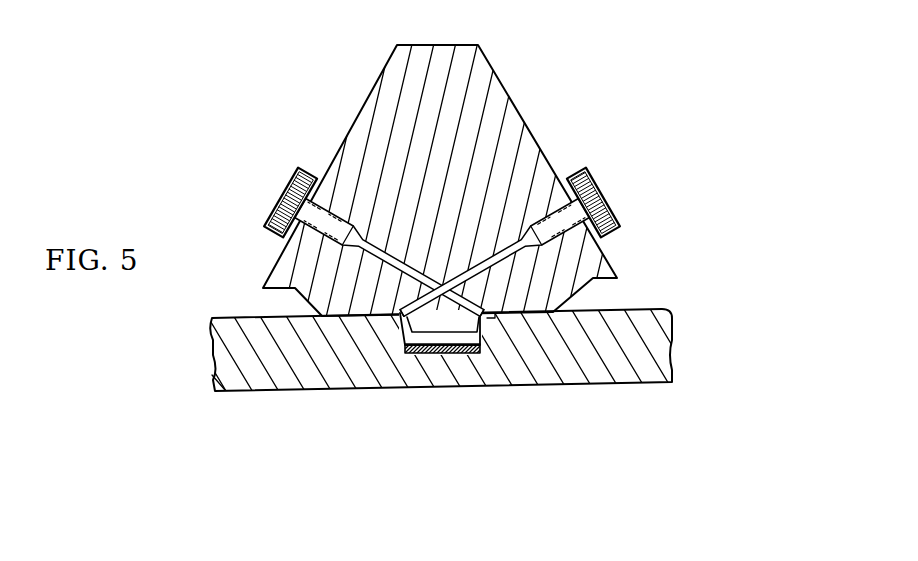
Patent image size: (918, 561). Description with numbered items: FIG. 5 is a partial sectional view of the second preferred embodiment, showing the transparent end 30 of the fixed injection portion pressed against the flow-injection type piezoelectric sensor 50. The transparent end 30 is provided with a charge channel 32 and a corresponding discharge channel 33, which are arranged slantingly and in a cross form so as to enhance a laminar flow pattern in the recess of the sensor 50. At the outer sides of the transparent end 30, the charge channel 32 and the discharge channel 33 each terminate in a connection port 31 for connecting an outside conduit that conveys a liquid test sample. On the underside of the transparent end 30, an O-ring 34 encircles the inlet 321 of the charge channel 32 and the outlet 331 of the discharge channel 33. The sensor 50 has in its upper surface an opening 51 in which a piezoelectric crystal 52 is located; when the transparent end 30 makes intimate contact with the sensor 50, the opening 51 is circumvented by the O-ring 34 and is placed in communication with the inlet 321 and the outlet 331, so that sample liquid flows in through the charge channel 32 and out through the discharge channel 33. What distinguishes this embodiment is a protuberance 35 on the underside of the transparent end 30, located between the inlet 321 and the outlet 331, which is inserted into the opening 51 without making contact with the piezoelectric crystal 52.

The transparent end 30 is at (478, 98).
The connection port 31 is at (298, 172).
The charge channel 32 is at (494, 260).
The inlet 321 is at (402, 340).
The discharge channel 33 is at (390, 263).
The outlet 331 is at (484, 335).
The O-ring 34 is at (490, 318).
The protuberance 35 is at (412, 335).
The flow-injection type piezoelectric sensor 50 is at (653, 335).
The opening 51 is at (404, 352).
The piezoelectric crystal 52 is at (450, 353).